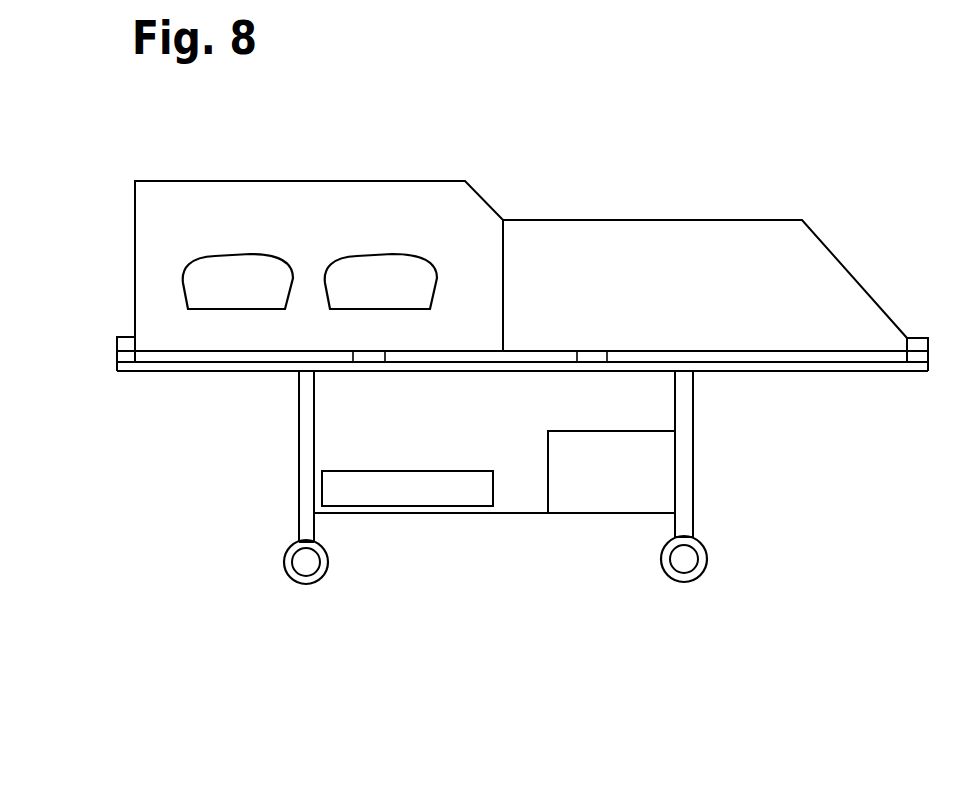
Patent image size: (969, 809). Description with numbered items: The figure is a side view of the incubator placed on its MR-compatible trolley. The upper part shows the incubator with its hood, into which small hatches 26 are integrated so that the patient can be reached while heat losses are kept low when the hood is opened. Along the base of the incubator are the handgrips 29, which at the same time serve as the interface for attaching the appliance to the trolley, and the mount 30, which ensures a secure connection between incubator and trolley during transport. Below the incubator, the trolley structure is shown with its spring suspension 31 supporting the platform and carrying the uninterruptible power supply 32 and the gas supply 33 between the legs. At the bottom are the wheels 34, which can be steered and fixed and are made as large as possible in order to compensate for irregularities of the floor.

The hatch 26 is at (238, 280).
The handgrip 29 is at (117, 350).
The mount 30 is at (117, 358).
The spring suspension 31 is at (682, 456).
The uninterruptible power supply 32 is at (595, 493).
The gas supply 33 is at (388, 488).
The wheel 34 is at (685, 559).